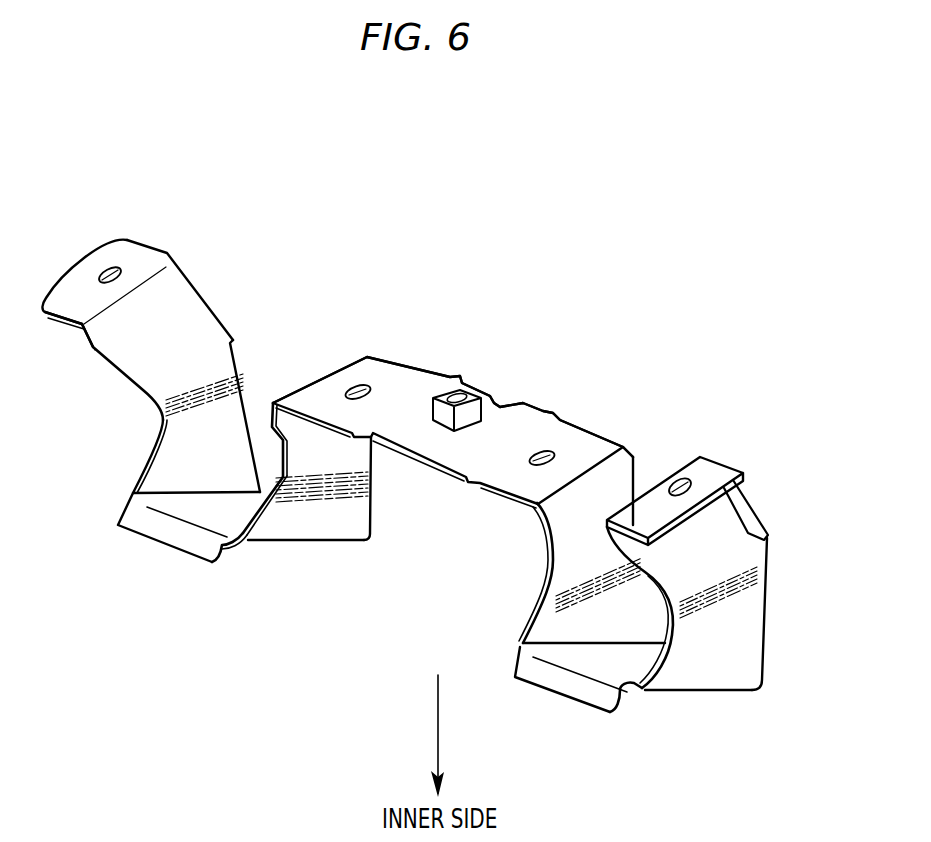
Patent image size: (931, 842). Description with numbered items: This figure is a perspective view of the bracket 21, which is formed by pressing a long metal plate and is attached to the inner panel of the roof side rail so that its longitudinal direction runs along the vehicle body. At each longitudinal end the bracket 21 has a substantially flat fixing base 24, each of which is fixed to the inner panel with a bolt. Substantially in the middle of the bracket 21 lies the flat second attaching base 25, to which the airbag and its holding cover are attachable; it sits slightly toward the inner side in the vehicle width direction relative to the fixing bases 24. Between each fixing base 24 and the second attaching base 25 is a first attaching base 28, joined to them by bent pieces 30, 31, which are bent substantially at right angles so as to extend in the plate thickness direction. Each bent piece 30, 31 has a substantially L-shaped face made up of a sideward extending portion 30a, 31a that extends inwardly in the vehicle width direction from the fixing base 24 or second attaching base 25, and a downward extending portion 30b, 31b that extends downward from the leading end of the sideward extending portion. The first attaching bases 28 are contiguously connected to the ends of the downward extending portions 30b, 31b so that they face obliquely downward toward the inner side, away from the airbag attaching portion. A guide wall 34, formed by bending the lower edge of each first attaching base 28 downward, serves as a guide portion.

The bracket 21 is at (464, 330).
The fixing base 24 is at (147, 258).
The second attaching base 25 is at (540, 422).
The first attaching base 28 is at (258, 545).
The bent piece 30 is at (198, 318).
The sideward extending portion 30a is at (110, 352).
The downward extending portion 30b is at (180, 445).
The bent piece 31 is at (357, 503).
The sideward extending portion 31a is at (293, 430).
The downward extending portion 31b is at (300, 540).
The guide wall 34 is at (157, 530).